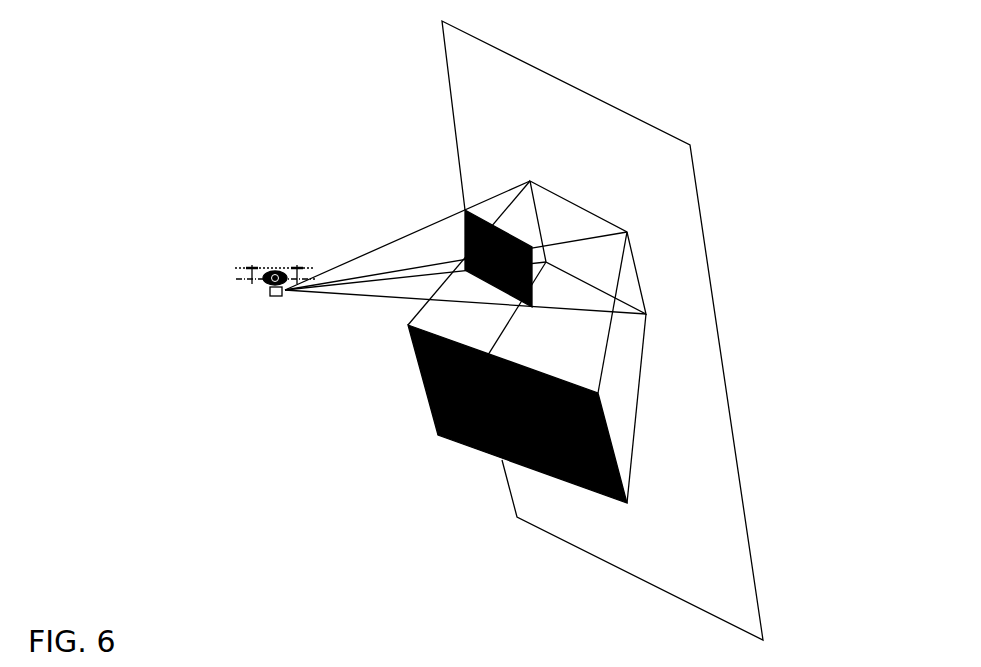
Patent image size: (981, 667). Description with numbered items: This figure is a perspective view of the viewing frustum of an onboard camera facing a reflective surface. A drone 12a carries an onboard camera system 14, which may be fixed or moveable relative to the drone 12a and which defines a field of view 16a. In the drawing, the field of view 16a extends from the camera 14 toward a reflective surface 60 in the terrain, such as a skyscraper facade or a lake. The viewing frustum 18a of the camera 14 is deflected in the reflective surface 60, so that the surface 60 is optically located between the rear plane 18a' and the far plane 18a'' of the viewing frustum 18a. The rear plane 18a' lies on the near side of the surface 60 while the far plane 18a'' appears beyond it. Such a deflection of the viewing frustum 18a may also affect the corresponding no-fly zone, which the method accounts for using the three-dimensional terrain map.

The reflective surface 60 is at (692, 290).
The drone 12a is at (284, 270).
The onboard camera system 14 is at (270, 293).
The field of view 16a is at (362, 253).
The viewing frustum 18a is at (602, 342).
The rear plane 18a' is at (462, 238).
The far plane 18a'' is at (477, 414).